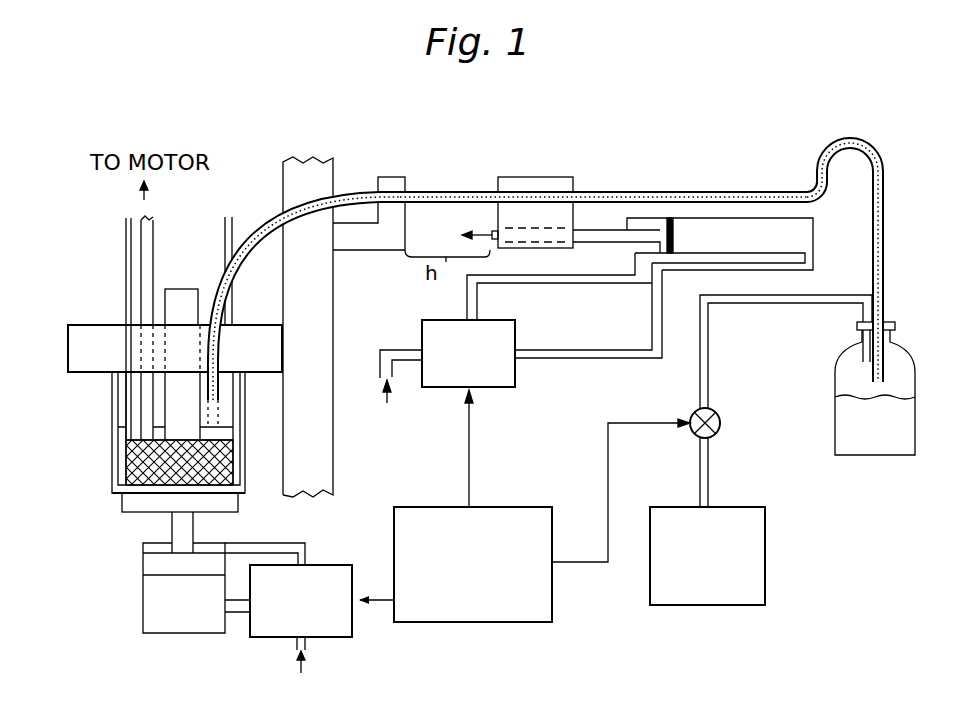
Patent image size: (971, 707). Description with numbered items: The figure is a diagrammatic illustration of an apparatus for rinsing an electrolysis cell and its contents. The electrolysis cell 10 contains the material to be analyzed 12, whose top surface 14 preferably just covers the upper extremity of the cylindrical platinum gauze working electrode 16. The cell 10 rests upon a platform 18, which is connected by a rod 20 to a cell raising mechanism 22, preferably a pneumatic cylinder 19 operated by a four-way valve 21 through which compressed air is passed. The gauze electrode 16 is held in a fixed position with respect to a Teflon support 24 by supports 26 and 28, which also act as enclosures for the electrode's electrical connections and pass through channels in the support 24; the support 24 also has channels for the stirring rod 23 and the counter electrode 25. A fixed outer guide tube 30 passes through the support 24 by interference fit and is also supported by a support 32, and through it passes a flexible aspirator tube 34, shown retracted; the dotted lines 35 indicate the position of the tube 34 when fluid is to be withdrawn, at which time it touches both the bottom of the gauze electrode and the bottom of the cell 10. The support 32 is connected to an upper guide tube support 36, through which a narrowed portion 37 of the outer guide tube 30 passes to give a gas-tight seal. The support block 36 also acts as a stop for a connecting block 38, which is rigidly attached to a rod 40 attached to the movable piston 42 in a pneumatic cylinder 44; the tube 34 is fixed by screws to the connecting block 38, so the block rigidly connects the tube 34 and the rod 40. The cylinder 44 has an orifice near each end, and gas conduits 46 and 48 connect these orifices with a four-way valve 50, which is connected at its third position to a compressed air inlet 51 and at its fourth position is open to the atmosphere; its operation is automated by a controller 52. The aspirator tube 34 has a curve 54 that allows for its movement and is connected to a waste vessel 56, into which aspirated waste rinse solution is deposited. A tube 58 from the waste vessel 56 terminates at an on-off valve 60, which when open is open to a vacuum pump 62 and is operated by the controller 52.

The electrolysis cell 10 is at (112, 460).
The material to be analyzed 12 is at (124, 439).
The top surface 14 is at (139, 428).
The platinum gauze working electrode 16 is at (132, 477).
The platform 18 is at (134, 513).
The pneumatic cylinder 19 is at (184, 587).
The rod 20 is at (193, 517).
The 4-way valve 21 is at (301, 619).
The cell raising mechanism 22 is at (143, 601).
The stirring rod 23 is at (140, 270).
The support 24 is at (175, 348).
The counter electrode 25 is at (188, 289).
The support 26 is at (125, 223).
The support 28 is at (226, 226).
The fixed outer guide tube 30 is at (252, 254).
The support 32 is at (313, 160).
The flexible aspirator tube 34 is at (433, 191).
The dotted lines 35 is at (241, 496).
The upper guide tube support 36 is at (378, 251).
The portion of outer guide tube 37 is at (383, 177).
The connecting block 38 is at (547, 177).
The rod 40 is at (618, 241).
The movable piston 42 is at (674, 226).
The pneumatic cylinder 44 is at (720, 244).
The gas conduit 46 is at (545, 278).
The gas conduit 48 is at (600, 348).
The four-way valve 50 is at (487, 387).
The compressed air inlet 51 is at (380, 378).
The controller 52 is at (542, 520).
The curve 54 is at (872, 118).
The waste vessel 56 is at (913, 360).
The tube 58 is at (803, 305).
The valve 60 is at (722, 426).
The vacuum pump 62 is at (707, 556).